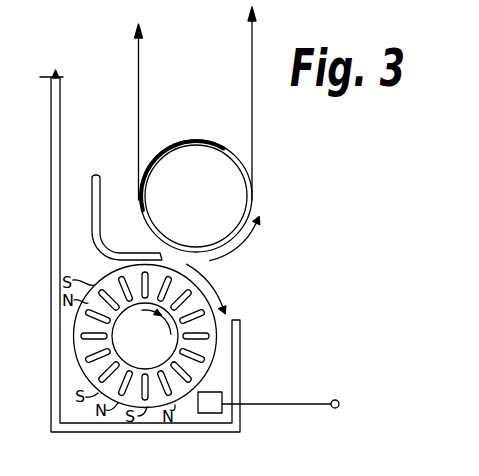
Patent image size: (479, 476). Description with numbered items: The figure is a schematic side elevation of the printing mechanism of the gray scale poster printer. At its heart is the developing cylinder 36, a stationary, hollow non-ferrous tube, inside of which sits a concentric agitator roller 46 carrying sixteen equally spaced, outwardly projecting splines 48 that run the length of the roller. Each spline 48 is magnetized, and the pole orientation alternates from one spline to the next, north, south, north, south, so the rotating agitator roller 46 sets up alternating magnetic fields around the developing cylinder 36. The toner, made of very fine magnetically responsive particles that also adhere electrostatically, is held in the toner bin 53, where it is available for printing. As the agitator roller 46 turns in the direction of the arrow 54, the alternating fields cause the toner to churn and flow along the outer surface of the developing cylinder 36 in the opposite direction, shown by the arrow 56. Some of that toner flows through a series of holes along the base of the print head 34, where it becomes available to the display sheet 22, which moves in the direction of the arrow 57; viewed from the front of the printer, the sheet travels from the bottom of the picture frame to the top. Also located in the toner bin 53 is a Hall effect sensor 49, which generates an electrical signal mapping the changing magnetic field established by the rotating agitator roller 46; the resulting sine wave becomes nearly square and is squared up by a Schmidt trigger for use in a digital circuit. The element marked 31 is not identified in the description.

The display sheet 22 is at (138, 72).
The roller 31 is at (189, 141).
The print head 34 is at (97, 176).
The developing cylinder 36 is at (109, 274).
The agitator roller 46 is at (77, 350).
The splines 48 is at (82, 333).
The Hall effect sensor 49 is at (208, 413).
The toner bin 53 is at (85, 432).
The arrow 54 is at (145, 336).
The arrow 56 is at (213, 284).
The arrow 57 is at (245, 240).